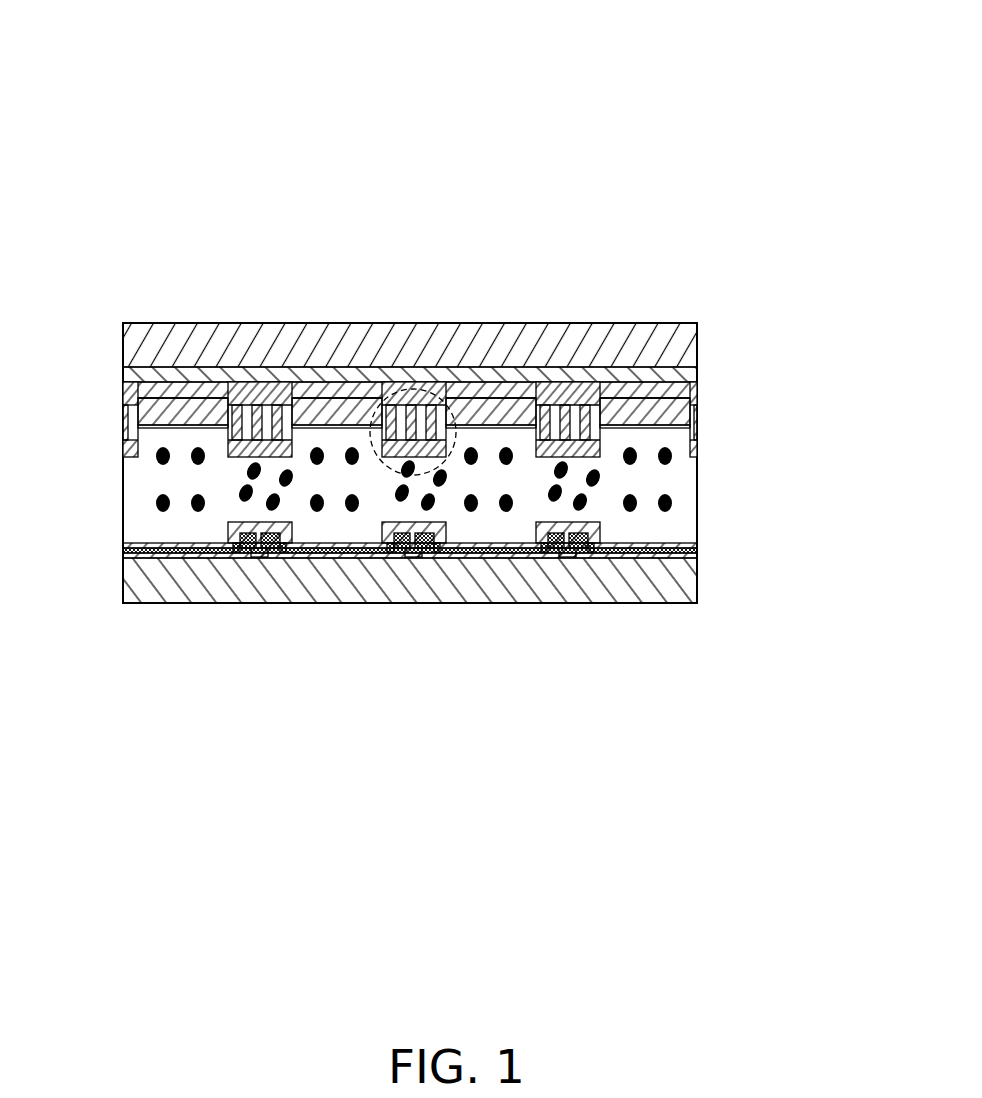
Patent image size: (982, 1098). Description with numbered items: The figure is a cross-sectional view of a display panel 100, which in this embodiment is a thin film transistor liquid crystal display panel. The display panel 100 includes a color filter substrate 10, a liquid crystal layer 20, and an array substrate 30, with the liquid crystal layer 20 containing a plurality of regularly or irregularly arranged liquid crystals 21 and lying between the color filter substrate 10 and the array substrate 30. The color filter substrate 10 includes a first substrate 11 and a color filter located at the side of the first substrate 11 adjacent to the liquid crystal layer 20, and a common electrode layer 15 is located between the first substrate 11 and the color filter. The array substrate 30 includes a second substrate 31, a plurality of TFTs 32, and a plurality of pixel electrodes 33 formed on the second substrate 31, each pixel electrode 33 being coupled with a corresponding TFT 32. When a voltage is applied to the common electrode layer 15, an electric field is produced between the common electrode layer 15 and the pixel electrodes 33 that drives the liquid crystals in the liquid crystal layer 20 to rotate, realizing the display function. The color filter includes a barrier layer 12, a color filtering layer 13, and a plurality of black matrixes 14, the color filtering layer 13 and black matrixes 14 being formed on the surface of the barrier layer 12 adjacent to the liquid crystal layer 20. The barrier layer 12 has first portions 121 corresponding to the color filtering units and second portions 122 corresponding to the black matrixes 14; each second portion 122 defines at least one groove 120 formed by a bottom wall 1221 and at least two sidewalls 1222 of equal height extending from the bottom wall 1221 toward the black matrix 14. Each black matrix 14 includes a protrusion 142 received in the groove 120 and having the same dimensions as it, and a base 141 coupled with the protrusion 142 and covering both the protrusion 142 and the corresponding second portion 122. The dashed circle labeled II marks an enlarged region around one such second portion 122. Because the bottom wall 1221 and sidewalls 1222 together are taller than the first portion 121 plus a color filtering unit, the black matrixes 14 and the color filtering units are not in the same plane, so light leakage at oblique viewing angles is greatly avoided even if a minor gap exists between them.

The display panel 100 is at (418, 38).
The color filter substrate 10 is at (847, 325).
The first substrate 11 is at (697, 347).
The barrier layer 12 is at (697, 380).
The color filtering layer 13 is at (697, 400).
The black matrix 14 is at (795, 425).
The base 141 is at (700, 430).
The protrusion 142 is at (700, 420).
The common electrode layer 15 is at (515, 398).
The groove 120 is at (588, 395).
The first portion 121 is at (170, 388).
The second portion 122 is at (260, 390).
The bottom wall 1221 is at (241, 445).
The sidewall 1222 is at (253, 457).
The enlarged region II is at (442, 392).
The liquid crystal layer 20 is at (705, 457).
The liquid crystal 21 is at (672, 508).
The array substrate 30 is at (650, 632).
The second substrate 31 is at (423, 578).
The TFT 32 is at (550, 557).
The pixel electrode 33 is at (630, 556).